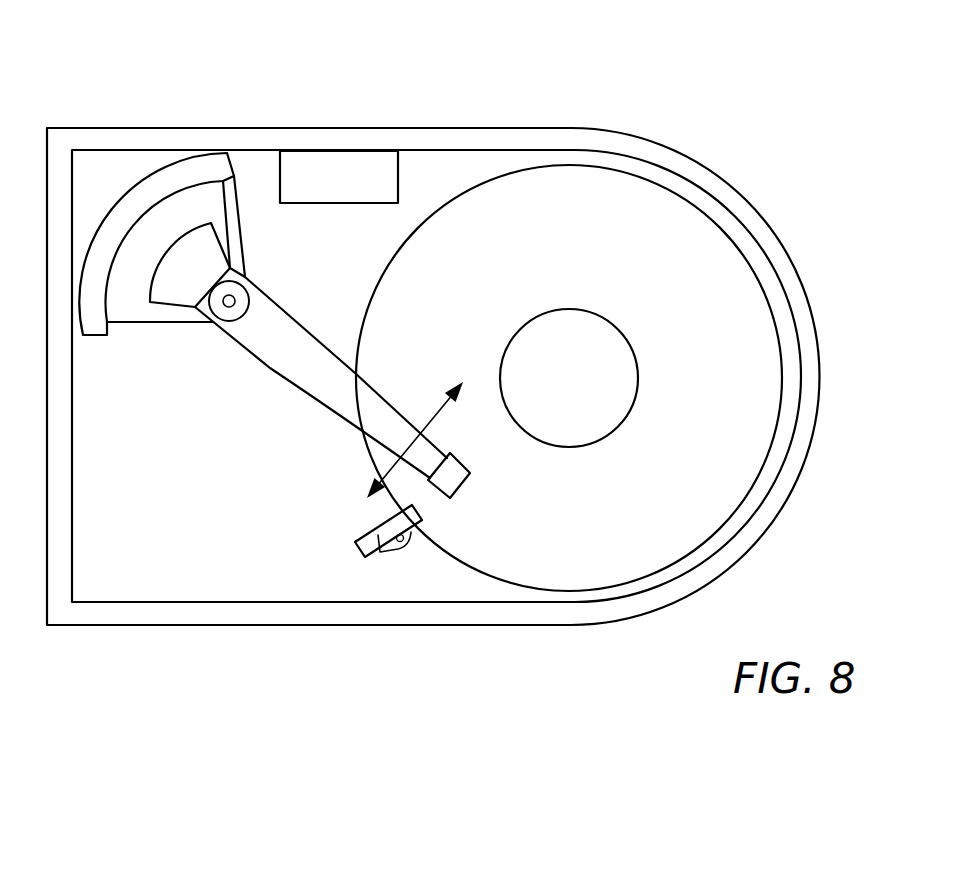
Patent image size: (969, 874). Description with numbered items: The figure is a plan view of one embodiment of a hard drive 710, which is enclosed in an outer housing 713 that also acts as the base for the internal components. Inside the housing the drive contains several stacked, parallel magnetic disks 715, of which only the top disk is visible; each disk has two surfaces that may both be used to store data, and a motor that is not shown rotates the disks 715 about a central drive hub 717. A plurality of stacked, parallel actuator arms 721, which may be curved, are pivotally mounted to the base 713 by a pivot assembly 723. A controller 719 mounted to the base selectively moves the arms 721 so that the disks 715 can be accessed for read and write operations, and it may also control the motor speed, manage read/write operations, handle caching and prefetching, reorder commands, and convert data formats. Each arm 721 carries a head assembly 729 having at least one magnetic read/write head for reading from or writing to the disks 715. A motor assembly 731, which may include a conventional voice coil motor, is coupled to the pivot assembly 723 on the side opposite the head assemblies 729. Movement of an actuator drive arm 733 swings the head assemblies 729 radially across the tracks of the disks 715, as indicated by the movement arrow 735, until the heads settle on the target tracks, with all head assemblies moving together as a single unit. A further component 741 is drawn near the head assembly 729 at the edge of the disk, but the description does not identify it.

The disk drive 710 is at (681, 87).
The outer housing 713 is at (443, 127).
The magnetic disk 715 is at (690, 395).
The central drive hub 717 is at (545, 395).
The controller 719 is at (316, 194).
The actuator arm 721 is at (300, 357).
The pivot assembly 723 is at (232, 298).
The head assembly 729 is at (465, 485).
The motor assembly 731 is at (168, 173).
The actuator drive arm 733 is at (178, 323).
The movement arrow 735 is at (430, 424).
The load/unload ramp 741 is at (343, 512).